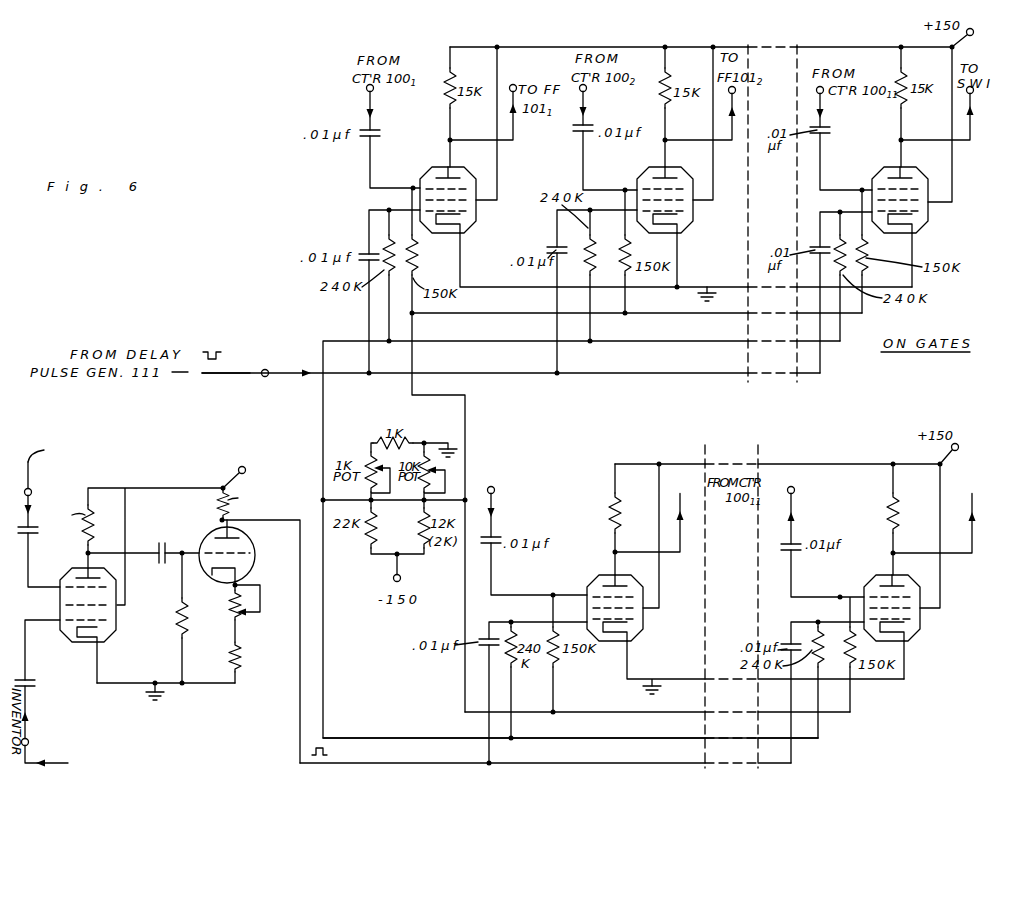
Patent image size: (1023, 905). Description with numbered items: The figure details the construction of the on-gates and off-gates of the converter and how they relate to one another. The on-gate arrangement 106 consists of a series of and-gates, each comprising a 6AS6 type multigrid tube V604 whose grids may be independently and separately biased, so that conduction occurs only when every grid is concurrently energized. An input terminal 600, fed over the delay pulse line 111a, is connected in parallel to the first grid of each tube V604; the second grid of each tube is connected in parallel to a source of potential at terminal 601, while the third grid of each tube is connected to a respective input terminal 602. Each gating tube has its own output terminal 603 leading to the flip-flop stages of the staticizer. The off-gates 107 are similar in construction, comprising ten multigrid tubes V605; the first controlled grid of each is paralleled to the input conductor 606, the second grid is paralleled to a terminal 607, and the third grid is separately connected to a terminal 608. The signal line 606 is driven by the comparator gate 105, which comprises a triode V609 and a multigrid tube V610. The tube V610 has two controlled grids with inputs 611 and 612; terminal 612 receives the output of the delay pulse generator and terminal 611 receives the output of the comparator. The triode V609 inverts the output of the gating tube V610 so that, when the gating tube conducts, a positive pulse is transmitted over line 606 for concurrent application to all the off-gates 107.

The on-gate arrangement 106 is at (262, 71).
The off-gates 107 is at (745, 425).
The comparator gate 105 is at (245, 740).
The input terminal 600 is at (267, 370).
The delay pulse line 111a is at (226, 376).
The potential source terminal 601 is at (726, 35).
The input terminals 602 is at (366, 88).
The output terminals 603 is at (513, 85).
The input conductor 606 is at (421, 761).
The terminal 607 is at (806, 454).
The terminals 608 is at (494, 492).
The input 611 is at (31, 493).
The terminal 612 is at (34, 726).
The on-gate tube V604 is at (512, 247).
The off-gate tube V605 is at (690, 644).
The triode V609 is at (294, 544).
The multigrid tube V610 is at (153, 631).